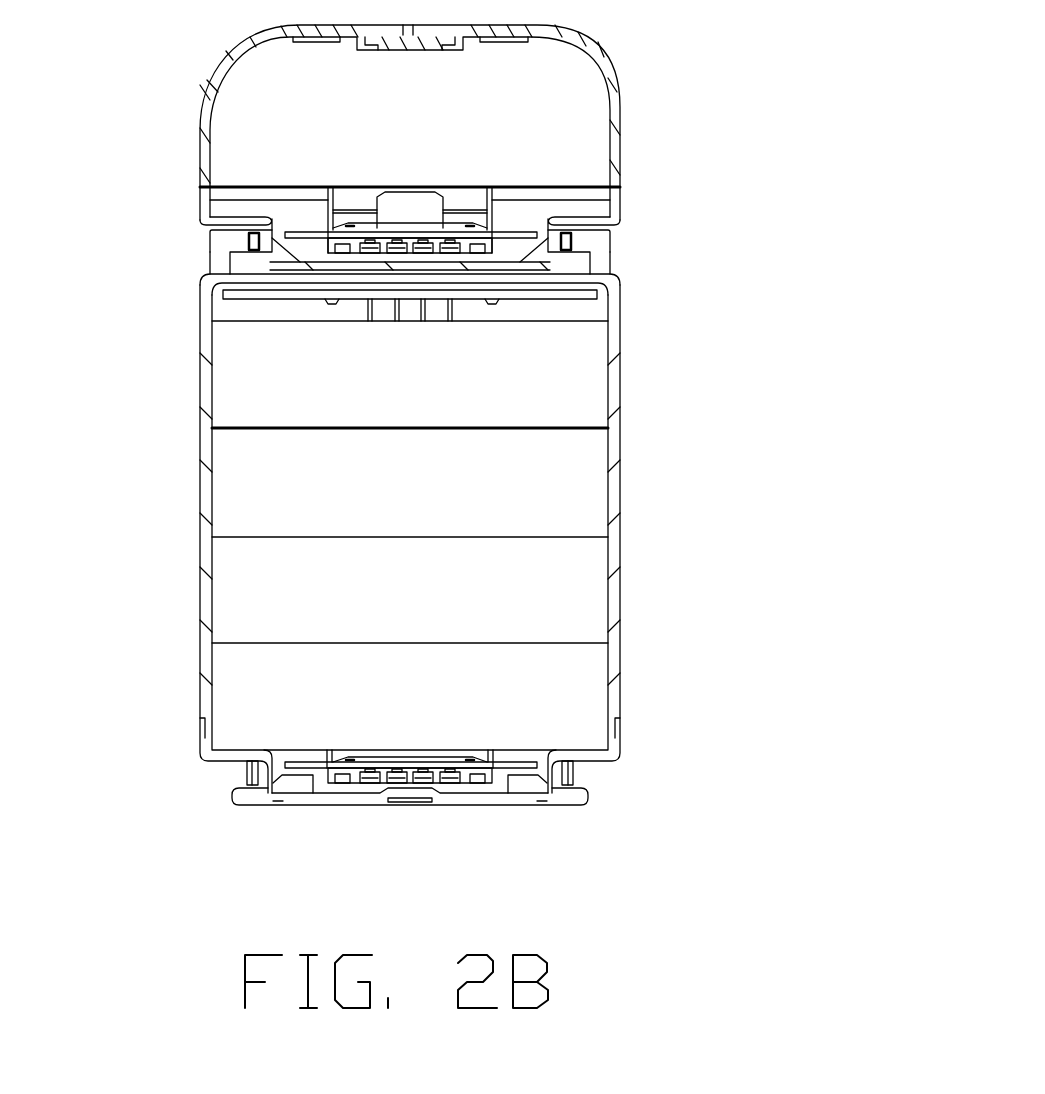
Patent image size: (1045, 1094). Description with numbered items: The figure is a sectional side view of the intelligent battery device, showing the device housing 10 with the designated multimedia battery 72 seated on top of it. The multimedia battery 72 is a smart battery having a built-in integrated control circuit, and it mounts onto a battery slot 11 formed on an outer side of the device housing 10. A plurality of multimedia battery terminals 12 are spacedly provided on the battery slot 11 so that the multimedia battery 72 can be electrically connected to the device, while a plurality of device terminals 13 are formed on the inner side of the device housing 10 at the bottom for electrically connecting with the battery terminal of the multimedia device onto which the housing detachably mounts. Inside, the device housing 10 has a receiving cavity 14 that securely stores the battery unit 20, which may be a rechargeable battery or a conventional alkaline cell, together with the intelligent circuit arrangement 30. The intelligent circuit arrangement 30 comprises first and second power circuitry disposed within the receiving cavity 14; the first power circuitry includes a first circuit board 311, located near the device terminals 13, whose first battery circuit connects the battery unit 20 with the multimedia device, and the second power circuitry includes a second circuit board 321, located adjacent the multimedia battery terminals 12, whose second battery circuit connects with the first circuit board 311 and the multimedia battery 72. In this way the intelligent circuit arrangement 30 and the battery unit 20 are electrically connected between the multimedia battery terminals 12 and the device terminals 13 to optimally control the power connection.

The device housing 10 is at (613, 398).
The battery slot 11 is at (645, 233).
The multimedia battery terminals 12 is at (387, 237).
The device terminals 13 is at (457, 783).
The receiving cavity 14 is at (585, 512).
The battery unit 20 is at (593, 612).
The intelligent circuit arrangement 30 is at (165, 226).
The multimedia battery 72 is at (540, 112).
The first circuit board 311 is at (297, 770).
The second circuit board 321 is at (507, 233).